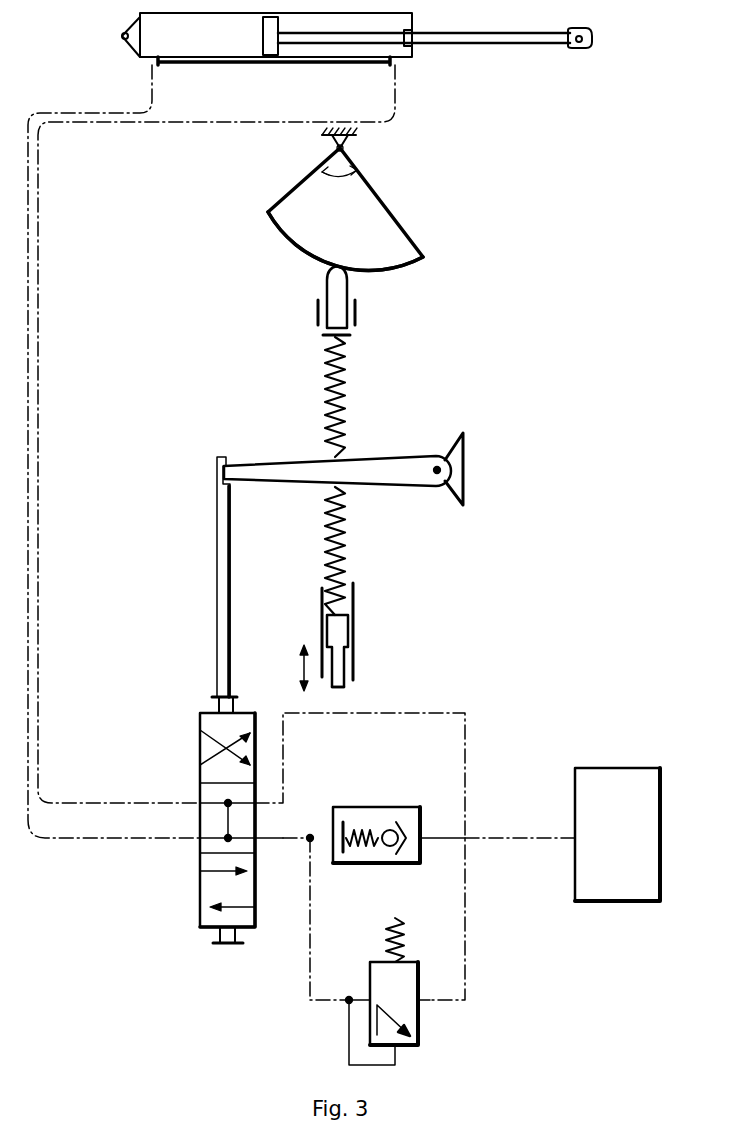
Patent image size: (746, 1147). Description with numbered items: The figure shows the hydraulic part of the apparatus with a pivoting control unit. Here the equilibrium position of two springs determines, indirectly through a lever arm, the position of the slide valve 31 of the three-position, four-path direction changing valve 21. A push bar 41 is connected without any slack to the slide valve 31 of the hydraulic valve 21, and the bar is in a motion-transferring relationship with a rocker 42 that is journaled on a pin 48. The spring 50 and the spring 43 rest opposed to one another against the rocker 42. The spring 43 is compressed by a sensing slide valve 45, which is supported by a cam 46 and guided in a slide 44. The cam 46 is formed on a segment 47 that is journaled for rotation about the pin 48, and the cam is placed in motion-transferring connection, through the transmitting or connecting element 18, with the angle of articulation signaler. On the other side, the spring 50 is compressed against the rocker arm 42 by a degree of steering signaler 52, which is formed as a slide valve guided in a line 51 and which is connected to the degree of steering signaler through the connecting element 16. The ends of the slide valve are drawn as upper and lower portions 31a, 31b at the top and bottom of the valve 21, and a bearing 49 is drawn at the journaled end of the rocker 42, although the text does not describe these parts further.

The connecting element 16 is at (340, 677).
The transmitting or connecting element 18 is at (300, 197).
The three-position, four-path direction changing valve 21 is at (197, 848).
The slide valve 31 is at (212, 704).
The upper end of valve plunger 31a is at (218, 697).
The lower end of valve plunger 31b is at (228, 946).
The push bar 41 is at (217, 512).
The rocker 42 is at (388, 472).
The spring 43 is at (341, 390).
The slide 44 is at (358, 317).
The sensing slide valve 45 is at (330, 289).
The cam 46 is at (290, 246).
The segment 47 is at (347, 151).
The pin 48 is at (356, 134).
The pivot bearing 49 is at (450, 472).
The spring 50 is at (343, 518).
The line 51 is at (342, 612).
The degree of steering signaler 52 is at (340, 635).